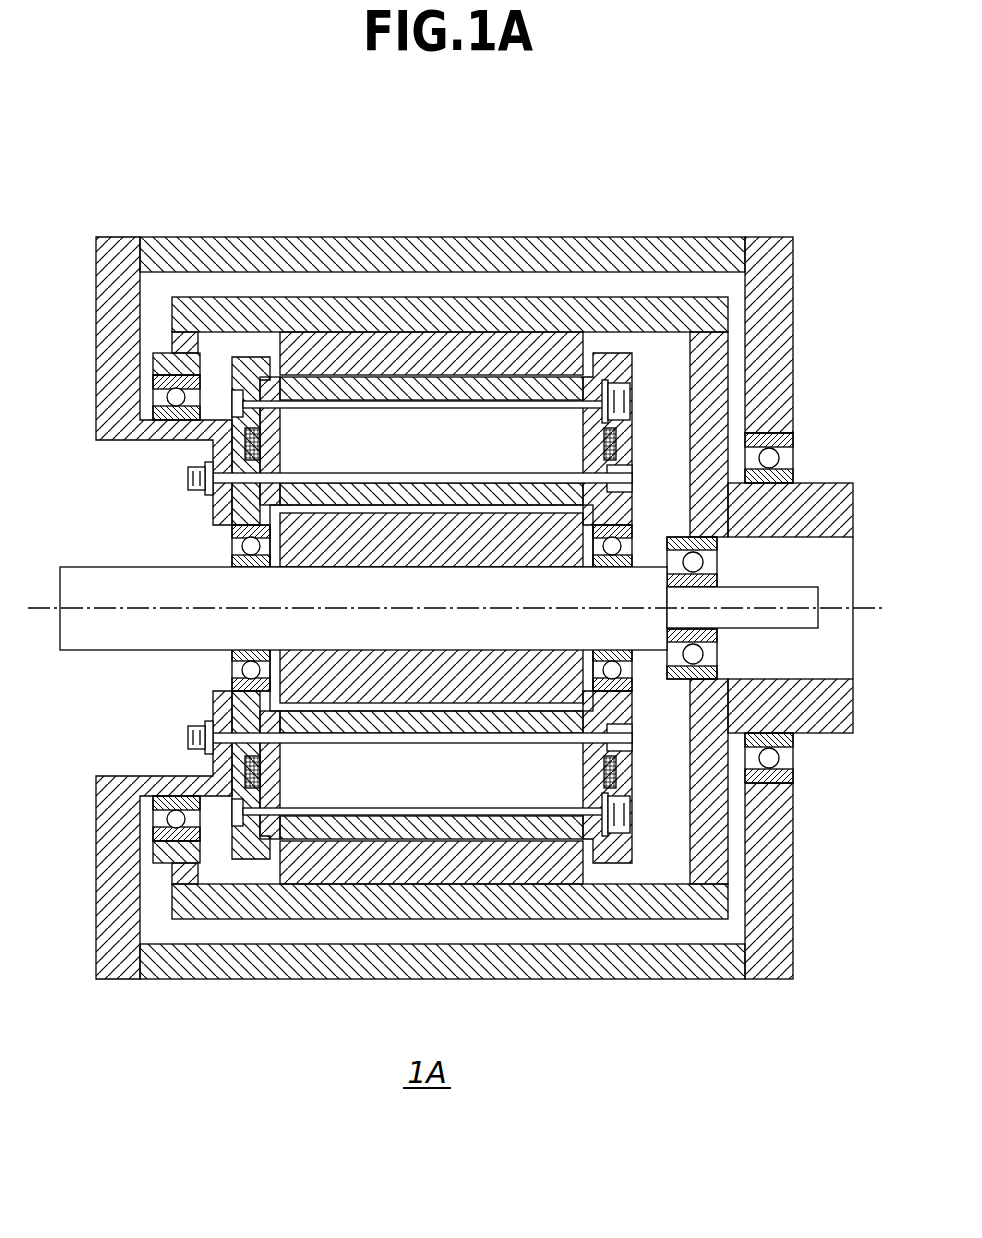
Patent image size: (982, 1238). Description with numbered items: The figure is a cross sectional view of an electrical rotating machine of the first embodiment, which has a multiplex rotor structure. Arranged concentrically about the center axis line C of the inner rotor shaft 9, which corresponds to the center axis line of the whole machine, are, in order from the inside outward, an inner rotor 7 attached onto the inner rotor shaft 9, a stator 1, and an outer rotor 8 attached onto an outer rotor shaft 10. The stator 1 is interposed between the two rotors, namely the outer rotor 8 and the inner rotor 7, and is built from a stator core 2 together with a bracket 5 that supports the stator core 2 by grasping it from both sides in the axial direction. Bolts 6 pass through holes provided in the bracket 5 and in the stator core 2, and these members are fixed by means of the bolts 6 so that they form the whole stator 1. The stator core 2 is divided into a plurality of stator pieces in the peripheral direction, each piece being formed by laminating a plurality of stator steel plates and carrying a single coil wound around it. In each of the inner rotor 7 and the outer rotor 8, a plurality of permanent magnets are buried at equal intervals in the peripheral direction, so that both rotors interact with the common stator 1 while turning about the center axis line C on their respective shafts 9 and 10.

The stator 1 is at (270, 873).
The stator core 2 is at (367, 378).
The bracket 5 is at (247, 350).
The bolts 6 is at (634, 400).
The inner rotor 7 is at (342, 560).
The outer rotor 8 is at (488, 351).
The inner rotor shaft 9 is at (121, 633).
The outer rotor shaft 10 is at (817, 483).
The center axis line C is at (133, 607).